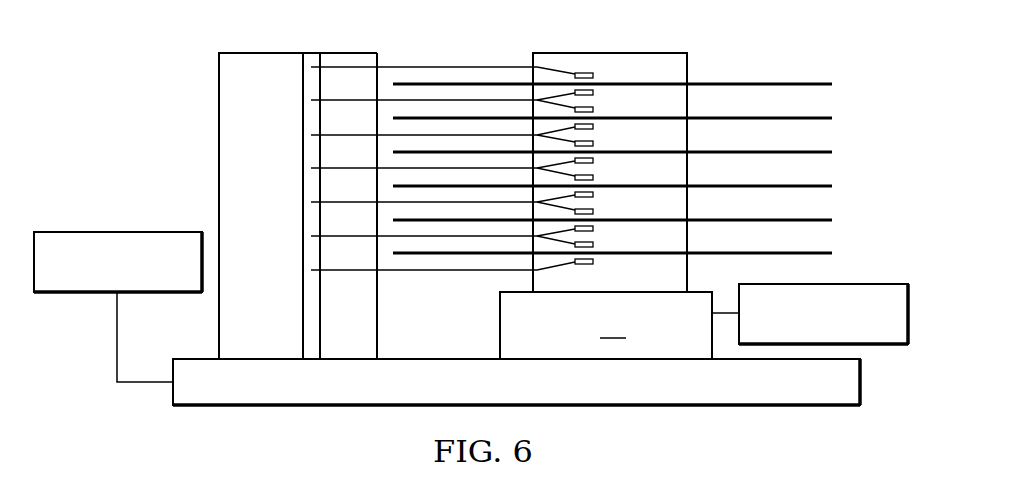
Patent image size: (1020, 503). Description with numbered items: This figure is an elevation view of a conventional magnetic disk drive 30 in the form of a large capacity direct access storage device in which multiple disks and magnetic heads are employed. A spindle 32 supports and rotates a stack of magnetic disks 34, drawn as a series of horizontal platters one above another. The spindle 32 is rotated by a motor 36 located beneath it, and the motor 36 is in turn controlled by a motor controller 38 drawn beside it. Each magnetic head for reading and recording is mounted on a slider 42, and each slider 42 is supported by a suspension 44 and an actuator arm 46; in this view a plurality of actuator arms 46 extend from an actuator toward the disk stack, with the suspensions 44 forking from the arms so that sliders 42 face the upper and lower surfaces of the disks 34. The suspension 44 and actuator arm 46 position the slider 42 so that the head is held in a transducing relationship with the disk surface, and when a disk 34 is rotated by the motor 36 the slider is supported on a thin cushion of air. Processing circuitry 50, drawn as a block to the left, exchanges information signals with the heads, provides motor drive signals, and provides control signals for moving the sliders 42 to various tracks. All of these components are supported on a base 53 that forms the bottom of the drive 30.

The magnetic disk drive 30 is at (748, 46).
The spindle 32 is at (667, 52).
The magnetic disk 34 is at (806, 84).
The motor 36 is at (619, 325).
The motor controller 38 is at (895, 345).
The slider 42 is at (597, 108).
The suspension 44 is at (553, 105).
The actuator arm 46 is at (483, 100).
The processing circuitry 50 is at (97, 232).
The base 53 is at (233, 400).